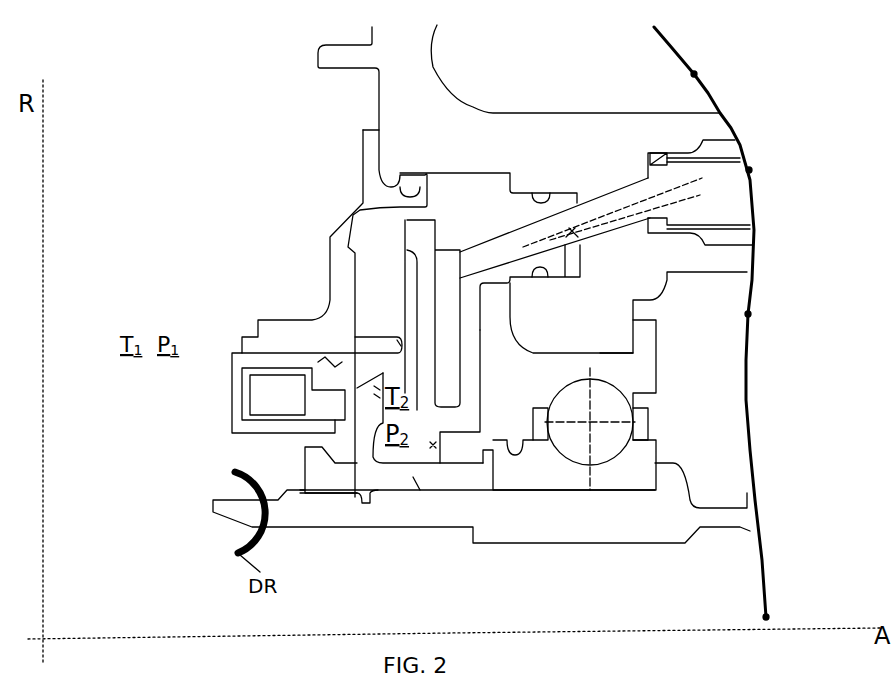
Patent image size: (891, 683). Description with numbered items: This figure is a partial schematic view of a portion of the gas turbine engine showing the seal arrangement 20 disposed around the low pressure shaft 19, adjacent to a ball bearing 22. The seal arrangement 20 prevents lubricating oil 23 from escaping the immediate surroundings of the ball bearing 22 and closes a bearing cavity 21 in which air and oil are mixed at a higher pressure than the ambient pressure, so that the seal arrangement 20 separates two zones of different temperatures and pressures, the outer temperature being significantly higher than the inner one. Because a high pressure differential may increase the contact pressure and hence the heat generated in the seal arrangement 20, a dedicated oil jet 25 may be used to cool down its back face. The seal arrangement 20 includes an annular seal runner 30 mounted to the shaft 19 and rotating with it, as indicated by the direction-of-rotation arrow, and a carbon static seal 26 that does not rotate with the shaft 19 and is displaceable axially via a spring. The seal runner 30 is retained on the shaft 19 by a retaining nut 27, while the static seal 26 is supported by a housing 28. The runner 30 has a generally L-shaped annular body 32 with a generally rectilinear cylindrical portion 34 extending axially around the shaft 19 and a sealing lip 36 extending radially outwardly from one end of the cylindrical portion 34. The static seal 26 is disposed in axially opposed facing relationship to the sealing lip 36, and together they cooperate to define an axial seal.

The low pressure shaft 19 is at (768, 618).
The seal arrangement 20 is at (261, 196).
The bearing cavity 21 is at (404, 313).
The ball bearing 22 is at (656, 412).
The lubricating oil 23 is at (638, 212).
The oil jet 25 is at (418, 398).
The carbon static seal 26 is at (299, 386).
The retaining nut 27 is at (318, 481).
The housing 28 is at (357, 203).
The annular seal runner 30 is at (397, 485).
The L-shaped annular body 32 is at (414, 484).
The cylindrical portion 34 is at (423, 470).
The sealing lip 36 is at (368, 403).